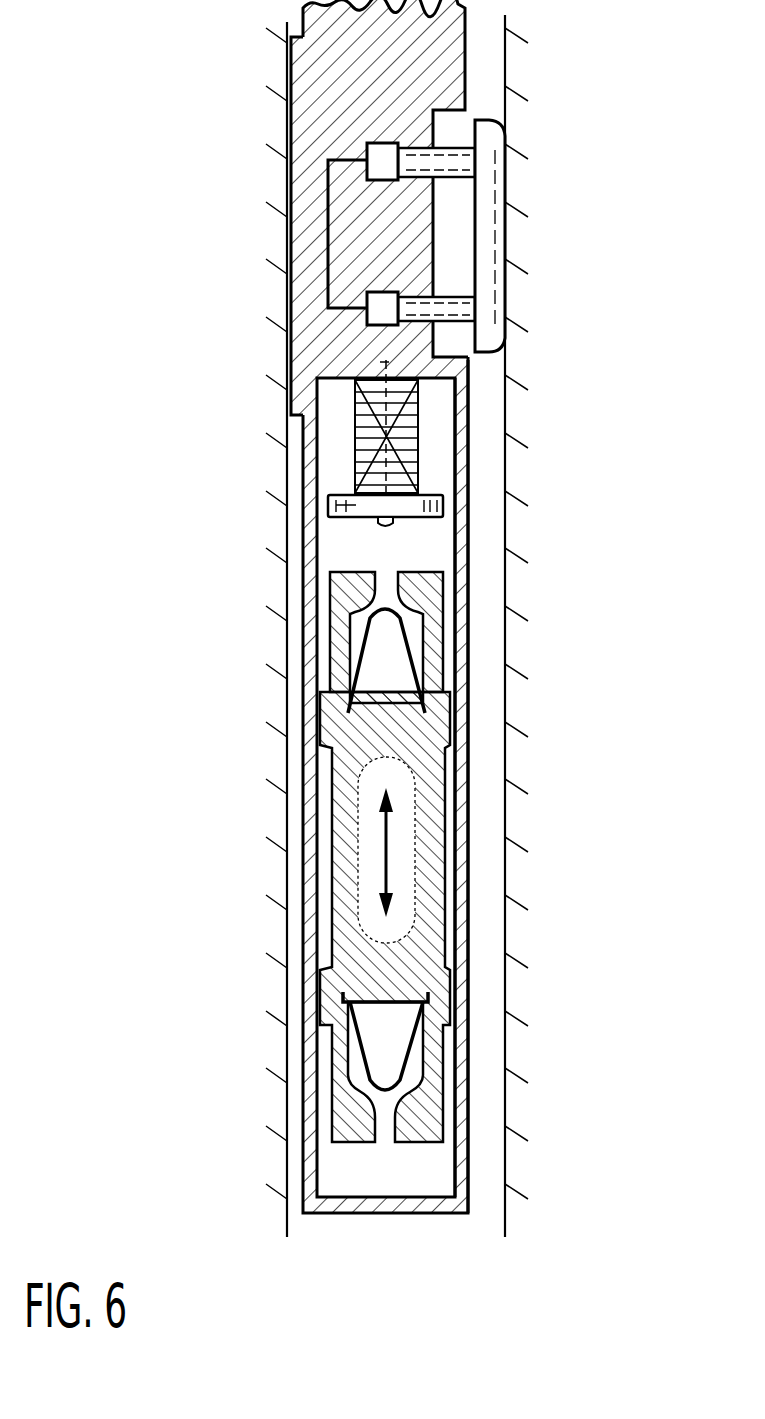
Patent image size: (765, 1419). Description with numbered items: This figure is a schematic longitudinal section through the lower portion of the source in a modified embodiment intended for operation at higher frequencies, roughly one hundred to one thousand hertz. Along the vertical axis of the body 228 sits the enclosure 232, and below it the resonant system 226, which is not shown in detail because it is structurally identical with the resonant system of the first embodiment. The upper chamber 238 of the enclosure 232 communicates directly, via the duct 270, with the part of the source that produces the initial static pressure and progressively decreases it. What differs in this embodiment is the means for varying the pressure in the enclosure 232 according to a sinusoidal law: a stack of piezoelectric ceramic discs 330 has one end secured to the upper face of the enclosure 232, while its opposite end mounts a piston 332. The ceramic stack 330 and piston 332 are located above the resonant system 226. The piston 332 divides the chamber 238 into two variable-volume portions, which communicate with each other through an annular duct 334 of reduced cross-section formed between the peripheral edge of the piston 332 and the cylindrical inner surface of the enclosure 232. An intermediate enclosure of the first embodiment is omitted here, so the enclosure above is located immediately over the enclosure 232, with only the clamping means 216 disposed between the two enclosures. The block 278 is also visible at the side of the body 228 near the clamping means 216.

The clamping means 216 is at (512, 185).
The resonant system 226 is at (500, 806).
The body 228 is at (462, 918).
The enclosure 232 is at (322, 834).
The upper chamber 238 is at (353, 552).
The duct 270 is at (320, 415).
The mounting block 278 is at (330, 230).
The stack of piezoelectric ceramic discs 330 is at (407, 442).
The piston 332 is at (327, 505).
The annular duct 334 is at (450, 513).